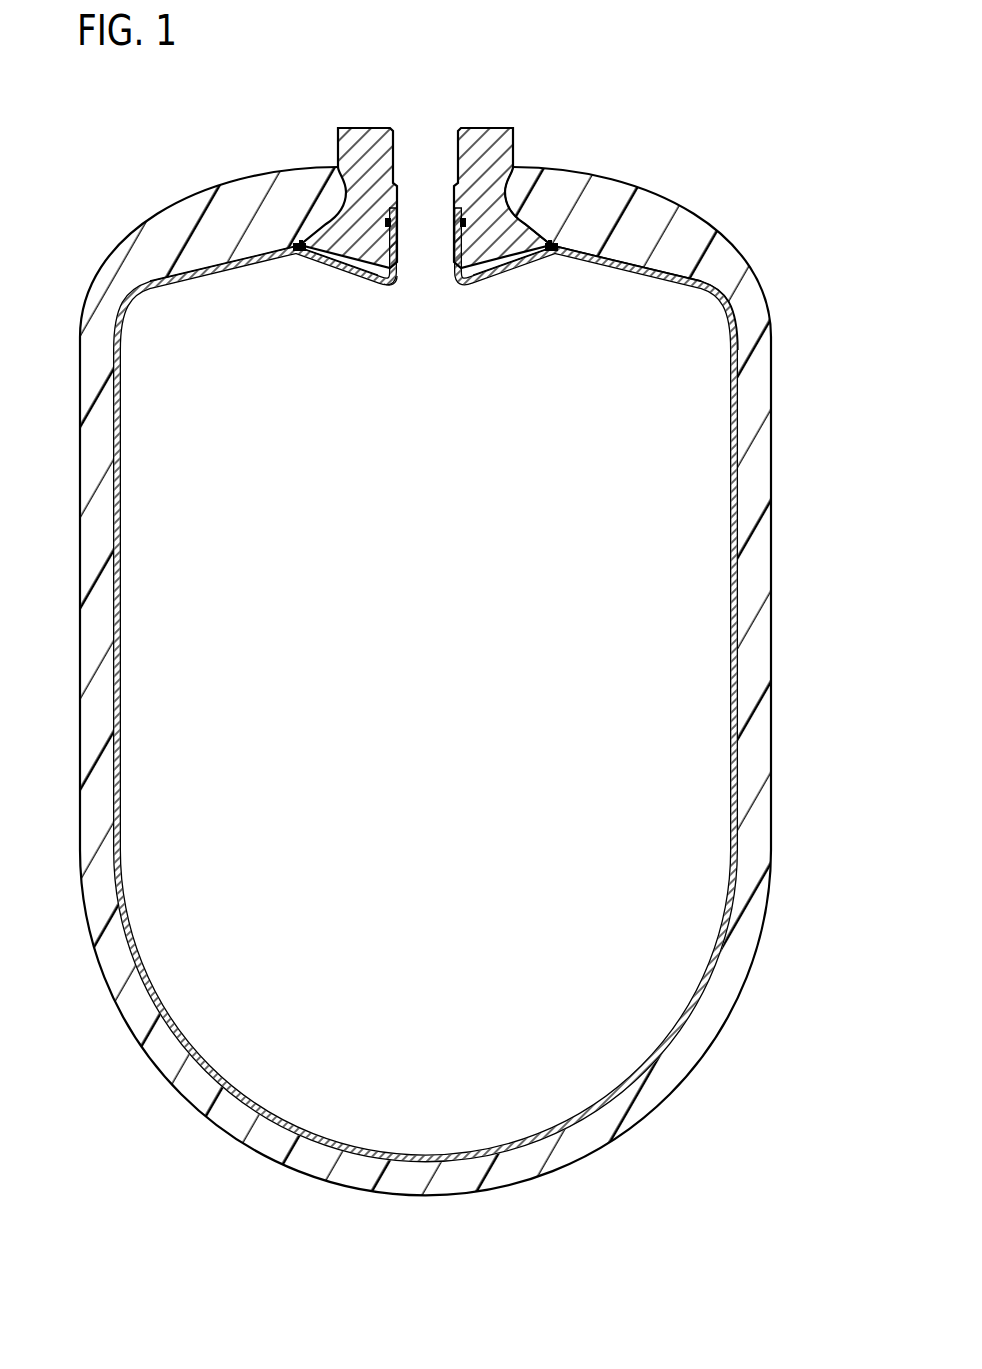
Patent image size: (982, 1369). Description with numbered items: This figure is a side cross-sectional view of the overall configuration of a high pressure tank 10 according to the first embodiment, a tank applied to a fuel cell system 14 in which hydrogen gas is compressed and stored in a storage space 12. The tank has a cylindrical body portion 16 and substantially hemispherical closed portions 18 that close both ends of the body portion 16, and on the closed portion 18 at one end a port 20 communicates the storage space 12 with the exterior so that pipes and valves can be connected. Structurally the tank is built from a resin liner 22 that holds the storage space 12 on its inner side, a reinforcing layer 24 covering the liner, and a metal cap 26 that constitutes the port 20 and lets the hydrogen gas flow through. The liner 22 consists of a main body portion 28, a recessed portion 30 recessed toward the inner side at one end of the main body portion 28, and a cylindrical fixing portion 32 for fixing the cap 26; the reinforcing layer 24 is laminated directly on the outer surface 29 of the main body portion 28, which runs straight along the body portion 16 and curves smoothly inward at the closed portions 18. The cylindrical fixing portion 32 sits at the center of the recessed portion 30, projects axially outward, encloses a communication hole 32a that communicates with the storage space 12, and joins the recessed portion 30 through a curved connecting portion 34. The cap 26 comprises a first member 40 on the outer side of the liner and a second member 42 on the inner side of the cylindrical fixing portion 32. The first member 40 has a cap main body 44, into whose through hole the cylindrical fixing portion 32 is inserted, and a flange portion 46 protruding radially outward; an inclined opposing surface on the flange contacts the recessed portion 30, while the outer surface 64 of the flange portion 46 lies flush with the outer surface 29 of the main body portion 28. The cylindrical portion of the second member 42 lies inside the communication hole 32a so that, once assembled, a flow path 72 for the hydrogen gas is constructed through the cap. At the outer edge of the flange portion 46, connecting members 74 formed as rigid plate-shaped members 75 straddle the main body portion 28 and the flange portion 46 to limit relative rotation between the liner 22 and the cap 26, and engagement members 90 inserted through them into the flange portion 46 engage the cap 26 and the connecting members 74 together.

The high pressure tank 10 is at (246, 95).
The fuel cell system 14 is at (434, 664).
The storage space 12 is at (200, 310).
The body portion 16 is at (91, 543).
The closed portions 18 is at (307, 165).
The port 20 is at (346, 163).
The liner 22 is at (741, 477).
The reinforcing layer 24 is at (772, 582).
The cap 26 is at (353, 123).
The main body portion 28 is at (733, 555).
The outer surface 29 is at (630, 253).
The recessed portion 30 is at (514, 283).
The cylindrical fixing portion 32 is at (348, 280).
The communication hole 32a is at (452, 262).
The curved connecting portion 34 is at (380, 289).
The first member 40 is at (529, 174).
The second member 42 is at (395, 262).
The cap main body 44 is at (483, 147).
The flange portion 46 is at (518, 230).
The outer surface 64 is at (550, 240).
The flow path 72 is at (420, 168).
The connecting members 74 is at (420, 248).
The plate-shaped members 75 is at (262, 252).
The engagement members 90 is at (297, 253).